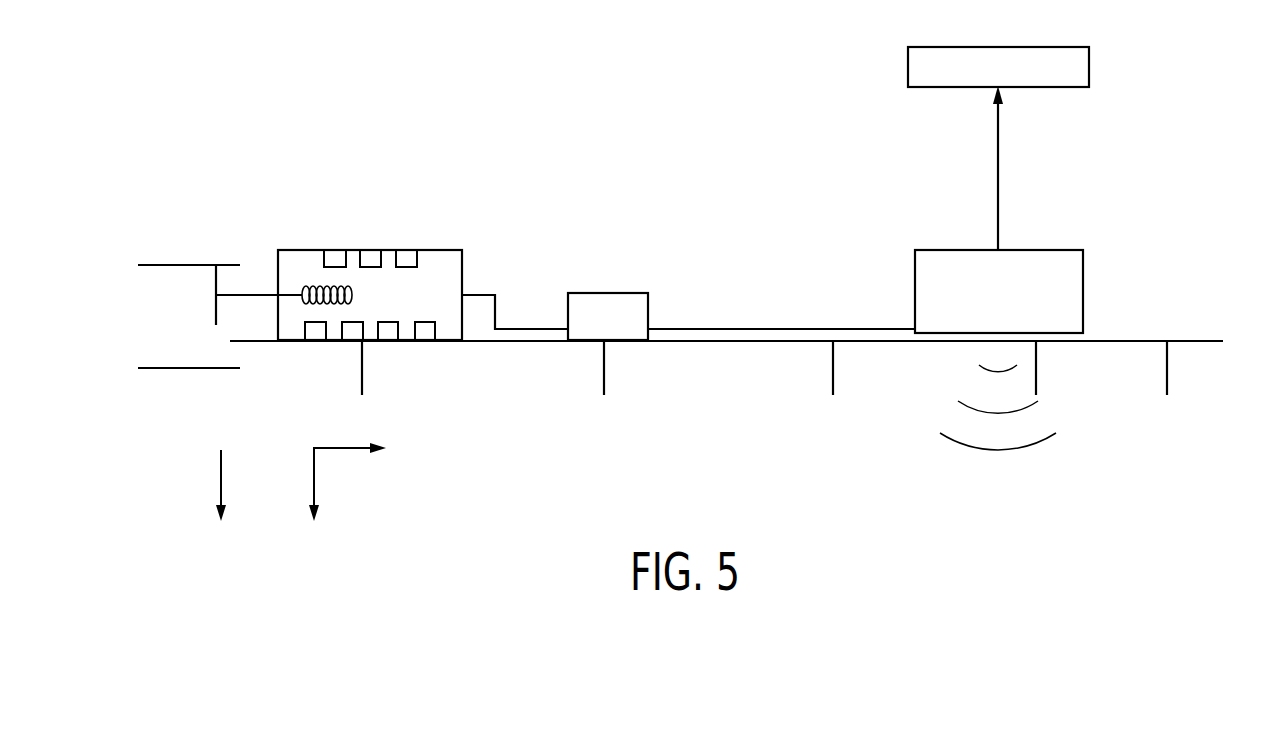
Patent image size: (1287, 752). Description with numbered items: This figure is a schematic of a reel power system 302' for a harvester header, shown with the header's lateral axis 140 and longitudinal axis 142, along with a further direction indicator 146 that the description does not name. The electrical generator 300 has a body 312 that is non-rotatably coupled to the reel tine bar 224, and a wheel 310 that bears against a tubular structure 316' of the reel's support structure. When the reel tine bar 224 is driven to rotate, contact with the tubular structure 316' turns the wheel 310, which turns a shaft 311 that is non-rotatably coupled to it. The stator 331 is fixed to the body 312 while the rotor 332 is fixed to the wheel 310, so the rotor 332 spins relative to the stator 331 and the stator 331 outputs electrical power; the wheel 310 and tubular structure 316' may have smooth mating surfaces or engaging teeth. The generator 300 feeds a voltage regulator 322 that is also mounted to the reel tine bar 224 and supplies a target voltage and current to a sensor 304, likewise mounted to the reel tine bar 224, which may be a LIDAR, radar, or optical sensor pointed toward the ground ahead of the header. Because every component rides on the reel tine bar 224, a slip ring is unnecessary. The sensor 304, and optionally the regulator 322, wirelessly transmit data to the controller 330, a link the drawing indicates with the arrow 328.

The controller 330 is at (997, 47).
The signal line to controller 328 is at (998, 173).
The sensor 304 is at (1042, 249).
The reel tine bar 224 is at (1193, 341).
The voltage regulator 322 is at (608, 292).
The electrical generator 300 is at (453, 181).
The body 312 is at (368, 250).
The stator 331 is at (324, 258).
The rotor 332 is at (310, 298).
The shaft 311 is at (257, 290).
The wheel 310 is at (213, 310).
The tubular structure 316' is at (171, 294).
The reel power system 302' is at (440, 90).
The direction arrow 146 is at (218, 480).
The longitudinal axis 142 is at (313, 480).
The lateral axis 140 is at (345, 450).